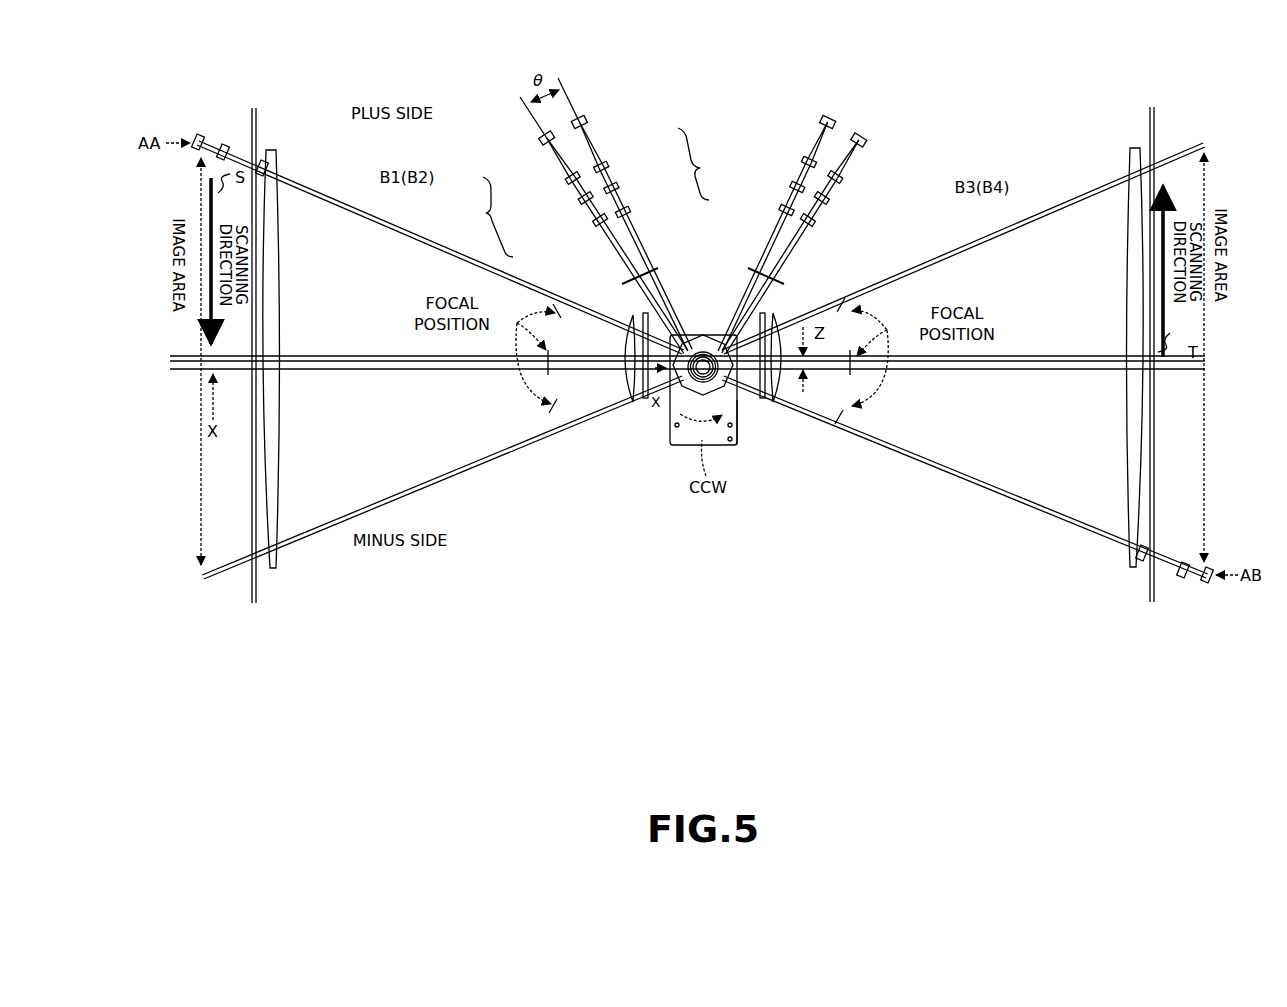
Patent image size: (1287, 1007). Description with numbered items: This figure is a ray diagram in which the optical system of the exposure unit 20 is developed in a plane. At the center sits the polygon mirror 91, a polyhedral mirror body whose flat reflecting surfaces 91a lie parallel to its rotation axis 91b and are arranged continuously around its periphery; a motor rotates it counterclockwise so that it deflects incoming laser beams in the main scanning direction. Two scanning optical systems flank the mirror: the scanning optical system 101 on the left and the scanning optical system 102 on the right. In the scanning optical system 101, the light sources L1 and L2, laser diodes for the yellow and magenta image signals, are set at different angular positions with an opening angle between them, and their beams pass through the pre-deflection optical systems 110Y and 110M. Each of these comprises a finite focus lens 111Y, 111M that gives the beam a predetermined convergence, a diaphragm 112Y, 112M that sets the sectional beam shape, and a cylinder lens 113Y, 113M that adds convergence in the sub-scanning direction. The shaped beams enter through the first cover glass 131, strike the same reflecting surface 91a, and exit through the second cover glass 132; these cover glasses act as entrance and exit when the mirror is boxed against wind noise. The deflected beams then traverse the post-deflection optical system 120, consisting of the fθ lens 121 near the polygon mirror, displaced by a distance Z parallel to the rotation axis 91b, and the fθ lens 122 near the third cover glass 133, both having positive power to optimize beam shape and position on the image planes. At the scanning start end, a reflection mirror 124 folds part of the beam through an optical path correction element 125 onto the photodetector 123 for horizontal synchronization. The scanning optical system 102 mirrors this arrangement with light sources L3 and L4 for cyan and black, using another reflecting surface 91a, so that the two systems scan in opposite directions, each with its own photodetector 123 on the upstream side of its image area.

The exposure unit 20 is at (968, 100).
The polygon mirror 91 is at (670, 400).
The reflecting surface 91a is at (735, 380).
The rotation axis 91b is at (738, 430).
The scanning optical system 101 is at (738, 675).
The scanning optical system 102 is at (1262, 700).
The pre-deflection optical system 110Y is at (476, 217).
The pre-deflection optical system 110M is at (713, 164).
The finite focus lens 111Y is at (567, 179).
The diaphragm 112Y is at (580, 199).
The cylinder lens 113Y is at (594, 222).
The finite focus lens 111M is at (607, 166).
The diaphragm 112M is at (616, 188).
The cylinder lens 113M is at (628, 212).
The post-deflection optical system 120 is at (572, 596).
The fθ lens 121 is at (631, 408).
The fθ lens 122 is at (276, 568).
The photodetector 123 is at (198, 134).
The reflection mirror 124 is at (264, 160).
The optical path correction element 125 is at (223, 144).
The first cover glass 131 is at (656, 272).
The second cover glass 132 is at (643, 312).
The third cover glass 133 is at (254, 604).
The light source L1 is at (540, 138).
The light source L2 is at (586, 121).
The light source L3 is at (868, 140).
The light source L4 is at (833, 119).